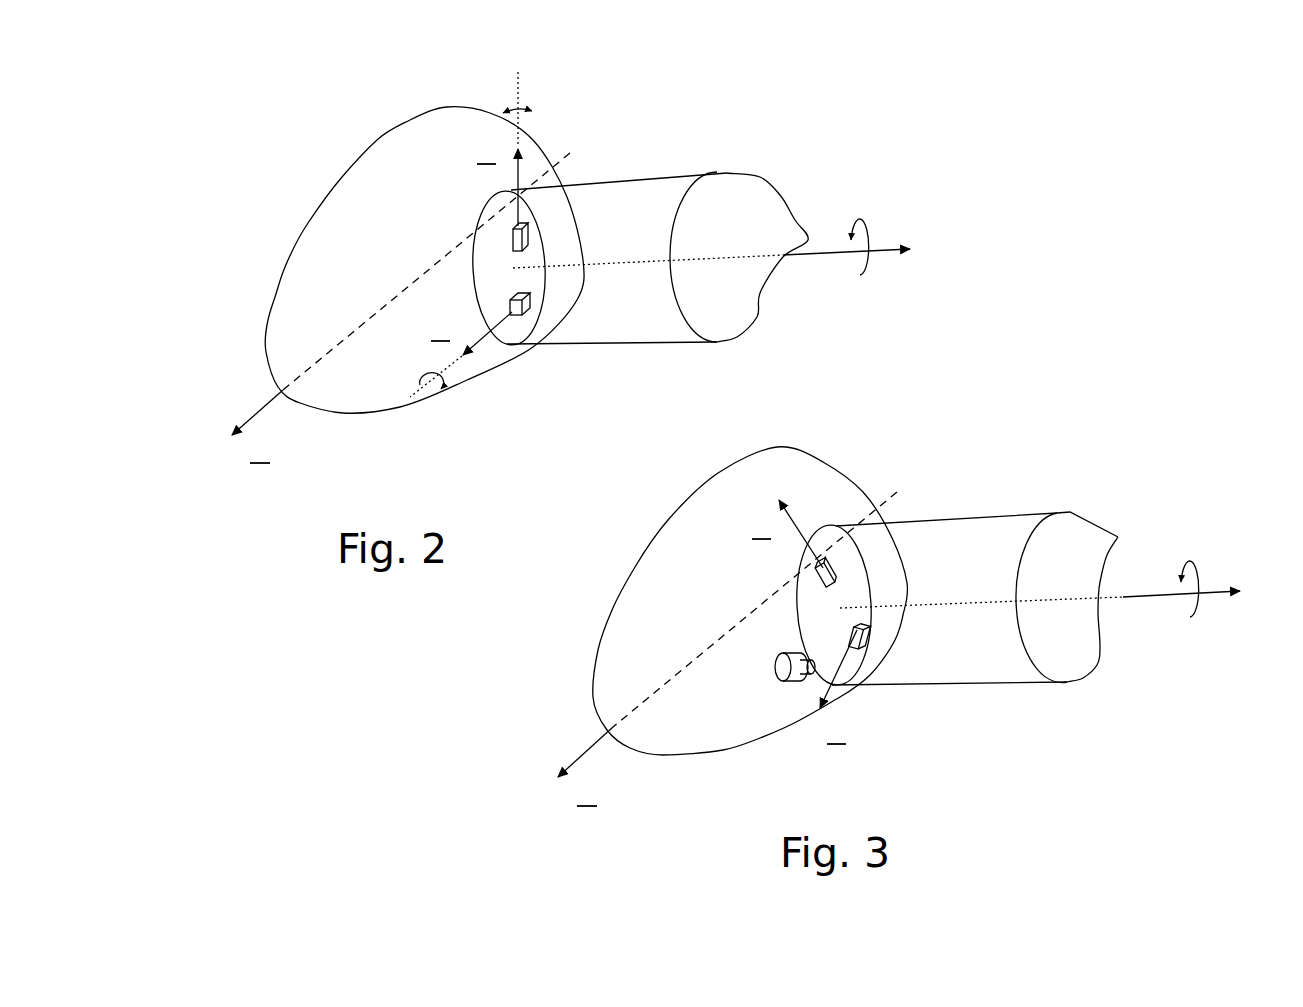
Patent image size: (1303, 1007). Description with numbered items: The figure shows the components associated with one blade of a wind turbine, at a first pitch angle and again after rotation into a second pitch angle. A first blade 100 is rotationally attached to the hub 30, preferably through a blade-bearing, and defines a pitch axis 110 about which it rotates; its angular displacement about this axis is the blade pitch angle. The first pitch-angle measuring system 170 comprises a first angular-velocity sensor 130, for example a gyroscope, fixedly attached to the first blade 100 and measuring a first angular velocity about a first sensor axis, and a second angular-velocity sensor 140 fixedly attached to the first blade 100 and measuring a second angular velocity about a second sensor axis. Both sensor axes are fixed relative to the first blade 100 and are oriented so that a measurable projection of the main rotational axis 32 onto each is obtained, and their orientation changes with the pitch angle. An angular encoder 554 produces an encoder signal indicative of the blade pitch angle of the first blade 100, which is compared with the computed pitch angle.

In FIG. 2, the hub 30 is at (373, 142).
In FIG. 2, the main rotational axis 32 is at (328, 354).
In FIG. 3, the main rotational axis 32 is at (658, 692).
In FIG. 2, the first blade 100 is at (663, 177).
In FIG. 3, the first blade 100 is at (988, 517).
In FIG. 2, the pitch axis 110 is at (802, 262).
In FIG. 3, the pitch axis 110 is at (1123, 599).
In FIG. 2, the first angular-velocity sensor 130 is at (522, 312).
In FIG. 3, the first angular-velocity sensor 130 is at (862, 628).
In FIG. 2, the second angular-velocity sensor 140 is at (510, 232).
In FIG. 3, the second angular-velocity sensor 140 is at (817, 584).
In FIG. 2, the first pitch-angle measuring system 170 is at (583, 170).
In FIG. 3, the angular encoder 554 is at (777, 668).